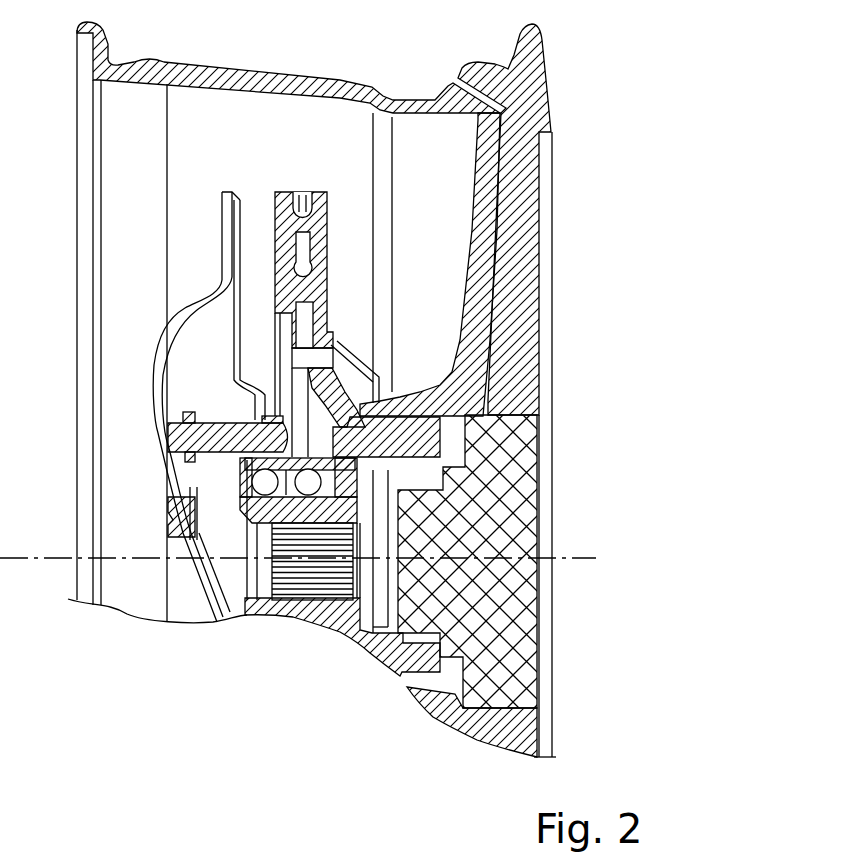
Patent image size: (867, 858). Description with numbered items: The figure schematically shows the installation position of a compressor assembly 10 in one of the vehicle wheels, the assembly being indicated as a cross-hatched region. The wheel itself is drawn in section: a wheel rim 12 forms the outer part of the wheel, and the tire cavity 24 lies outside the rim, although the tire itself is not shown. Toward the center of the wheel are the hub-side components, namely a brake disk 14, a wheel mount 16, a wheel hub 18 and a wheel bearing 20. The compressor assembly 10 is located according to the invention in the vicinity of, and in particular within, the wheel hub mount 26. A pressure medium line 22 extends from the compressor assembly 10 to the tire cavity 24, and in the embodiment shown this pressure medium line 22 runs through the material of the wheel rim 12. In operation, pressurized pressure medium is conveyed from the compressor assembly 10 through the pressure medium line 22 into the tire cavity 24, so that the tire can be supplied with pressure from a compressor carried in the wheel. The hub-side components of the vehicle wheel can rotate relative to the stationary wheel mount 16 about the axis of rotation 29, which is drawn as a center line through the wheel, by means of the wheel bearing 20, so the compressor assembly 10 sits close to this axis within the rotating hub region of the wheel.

The compressor assembly 10 is at (508, 612).
The wheel rim 12 is at (537, 103).
The brake disk 14 is at (283, 192).
The wheel mount 16 is at (167, 337).
The wheel hub 18 is at (305, 612).
The wheel bearing 20 is at (240, 464).
The pressure medium line 22 is at (497, 262).
The tire cavity 24 is at (321, 43).
The wheel hub mount 26 is at (511, 498).
The axis of rotation 29 is at (590, 560).